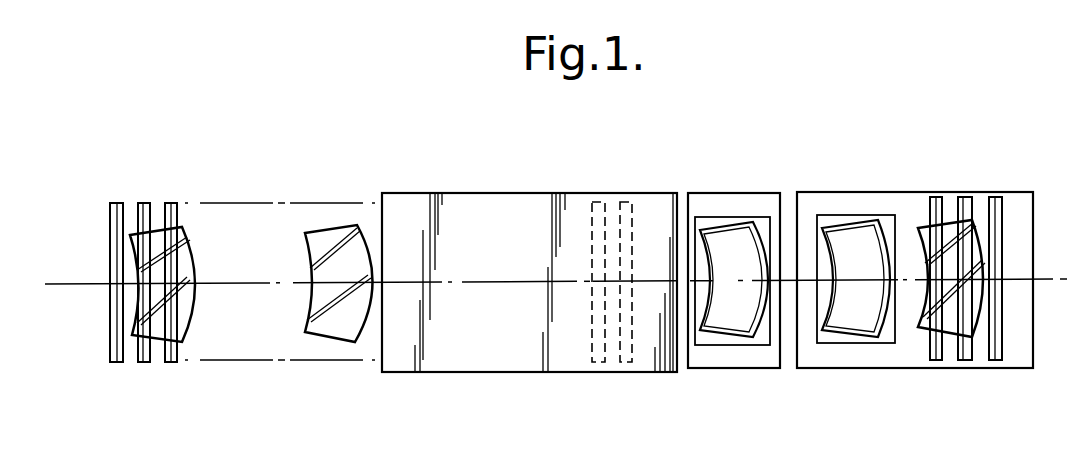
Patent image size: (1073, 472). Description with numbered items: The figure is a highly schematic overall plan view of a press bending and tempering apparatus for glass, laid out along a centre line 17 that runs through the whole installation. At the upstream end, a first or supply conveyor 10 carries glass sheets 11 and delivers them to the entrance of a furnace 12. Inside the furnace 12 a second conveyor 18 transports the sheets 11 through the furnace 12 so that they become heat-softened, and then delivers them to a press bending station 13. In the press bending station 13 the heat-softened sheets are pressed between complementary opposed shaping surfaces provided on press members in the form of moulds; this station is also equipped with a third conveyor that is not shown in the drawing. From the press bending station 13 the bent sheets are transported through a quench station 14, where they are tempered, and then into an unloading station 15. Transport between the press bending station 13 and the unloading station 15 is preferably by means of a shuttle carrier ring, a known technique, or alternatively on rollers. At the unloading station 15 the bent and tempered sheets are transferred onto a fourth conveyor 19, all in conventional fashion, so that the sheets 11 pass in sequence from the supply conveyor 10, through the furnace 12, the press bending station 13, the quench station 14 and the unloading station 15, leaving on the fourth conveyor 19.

The supply conveyor 10 is at (122, 230).
The glass sheets 11 is at (185, 240).
The furnace 12 is at (491, 183).
The press bending station 13 is at (731, 178).
The quench station 14 is at (844, 172).
The unloading station 15 is at (952, 172).
The centre line 17 is at (72, 284).
The second conveyor 18 is at (594, 204).
The fourth conveyor 19 is at (1000, 205).